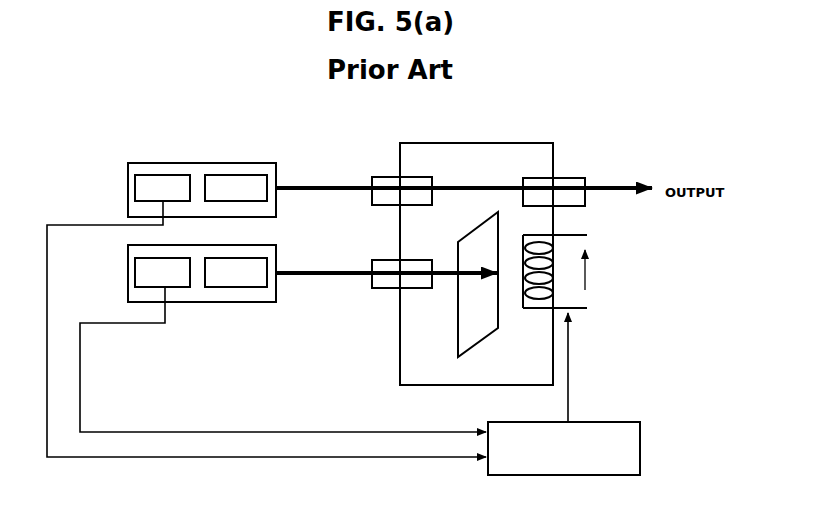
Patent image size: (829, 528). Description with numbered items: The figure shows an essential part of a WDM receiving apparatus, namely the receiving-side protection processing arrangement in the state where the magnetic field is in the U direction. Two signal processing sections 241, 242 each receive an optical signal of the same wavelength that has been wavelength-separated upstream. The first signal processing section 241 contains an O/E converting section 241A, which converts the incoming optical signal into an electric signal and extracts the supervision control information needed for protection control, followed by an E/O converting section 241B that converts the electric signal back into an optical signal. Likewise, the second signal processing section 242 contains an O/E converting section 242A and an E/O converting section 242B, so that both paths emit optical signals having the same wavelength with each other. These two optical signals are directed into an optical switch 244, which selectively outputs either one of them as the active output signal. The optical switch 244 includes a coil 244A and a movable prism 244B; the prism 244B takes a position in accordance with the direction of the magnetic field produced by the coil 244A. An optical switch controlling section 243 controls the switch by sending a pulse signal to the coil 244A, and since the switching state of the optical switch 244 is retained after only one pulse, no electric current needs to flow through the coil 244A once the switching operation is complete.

The signal processing section 241 is at (200, 163).
The O/E converting section 241A is at (135, 188).
The E/O converting section 241B is at (237, 175).
The signal processing section 242 is at (200, 302).
The O/E converting section 242A is at (135, 270).
The E/O converting section 242B is at (237, 260).
The optical switch controlling section 243 is at (640, 448).
The optical switch 244 is at (477, 143).
The coil 244A is at (563, 238).
The prism 244B is at (458, 318).